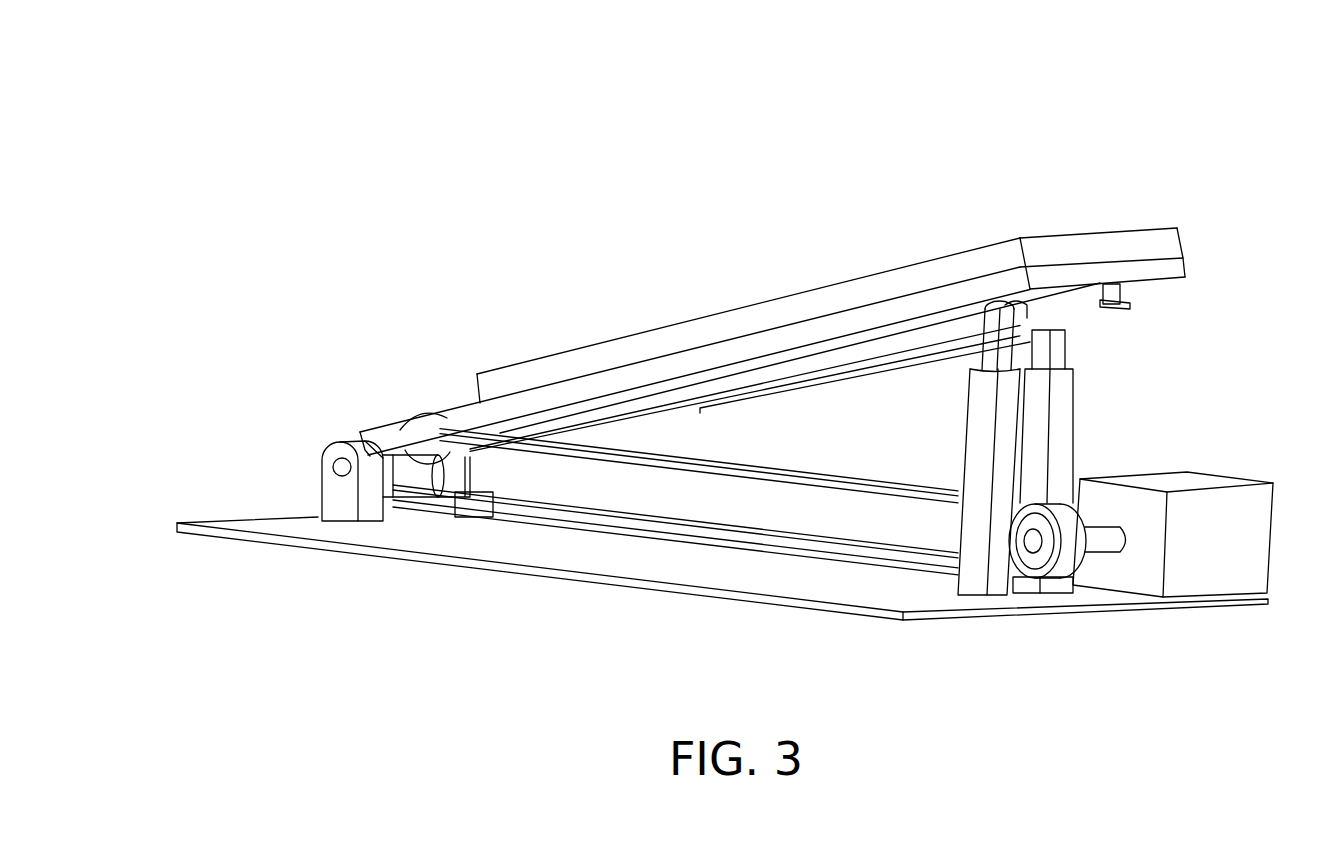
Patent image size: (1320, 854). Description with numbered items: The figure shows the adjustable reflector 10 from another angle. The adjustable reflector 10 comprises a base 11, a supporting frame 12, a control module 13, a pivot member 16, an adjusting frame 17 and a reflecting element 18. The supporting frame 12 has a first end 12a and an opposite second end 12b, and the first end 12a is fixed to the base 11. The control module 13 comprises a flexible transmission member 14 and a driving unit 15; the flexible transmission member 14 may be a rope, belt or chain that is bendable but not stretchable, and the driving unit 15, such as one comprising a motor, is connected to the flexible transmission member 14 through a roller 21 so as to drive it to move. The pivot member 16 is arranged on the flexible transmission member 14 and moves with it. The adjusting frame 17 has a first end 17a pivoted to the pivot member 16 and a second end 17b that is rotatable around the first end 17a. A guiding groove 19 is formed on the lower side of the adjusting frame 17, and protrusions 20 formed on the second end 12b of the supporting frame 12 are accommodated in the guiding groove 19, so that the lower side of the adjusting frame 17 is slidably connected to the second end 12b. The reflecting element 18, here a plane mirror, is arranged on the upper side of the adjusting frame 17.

The adjustable reflector 10 is at (722, 122).
The base 11 is at (593, 580).
The supporting frame 12 is at (972, 580).
The first end 12a is at (952, 584).
The second end 12b is at (979, 321).
The control module 13 is at (1171, 465).
The flexible transmission member 14 is at (715, 535).
The driving unit 15 is at (1117, 573).
The pivot member 16 is at (417, 460).
The adjusting frame 17 is at (616, 383).
The first end 17a is at (378, 425).
The second end 17b is at (1186, 268).
The reflecting element 18 is at (1149, 246).
The guiding groove 19 is at (1102, 292).
The protrusions 20 is at (1022, 313).
The roller 21 is at (1033, 565).